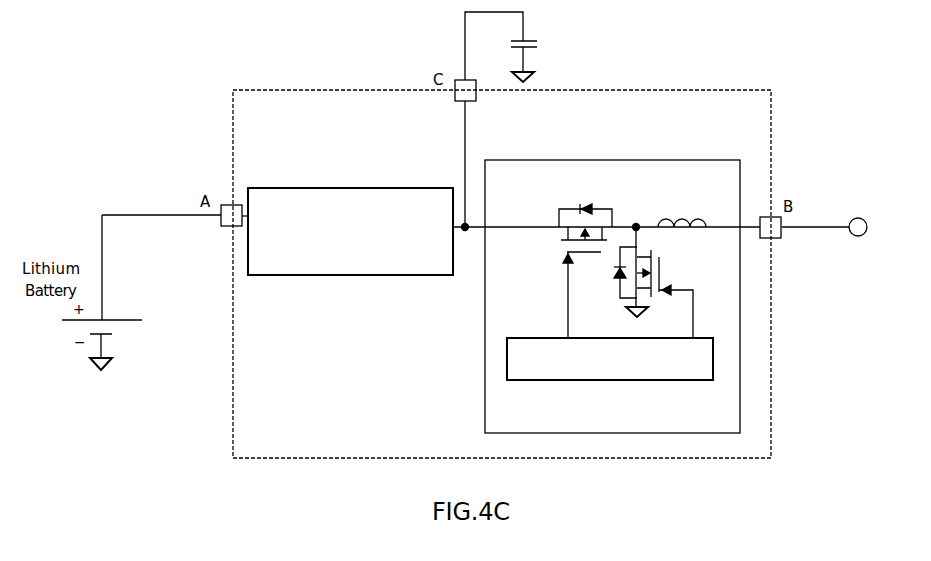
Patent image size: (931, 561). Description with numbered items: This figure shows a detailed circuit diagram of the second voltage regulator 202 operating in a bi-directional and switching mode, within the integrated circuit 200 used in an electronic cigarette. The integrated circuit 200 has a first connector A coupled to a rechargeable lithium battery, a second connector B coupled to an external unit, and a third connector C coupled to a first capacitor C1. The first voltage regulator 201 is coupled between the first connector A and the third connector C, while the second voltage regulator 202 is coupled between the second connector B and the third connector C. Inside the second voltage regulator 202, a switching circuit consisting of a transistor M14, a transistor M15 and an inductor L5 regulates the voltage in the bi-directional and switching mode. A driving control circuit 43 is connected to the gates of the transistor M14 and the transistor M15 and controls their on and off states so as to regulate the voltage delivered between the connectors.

The integrated circuit 200 is at (662, 90).
The first voltage regulator 201 is at (345, 188).
The second voltage regulator 202 is at (592, 160).
The driving control circuit 43 is at (648, 338).
The first capacitor C1 is at (537, 61).
The inductor L5 is at (682, 213).
The transistor M14 is at (565, 271).
The transistor M15 is at (657, 281).